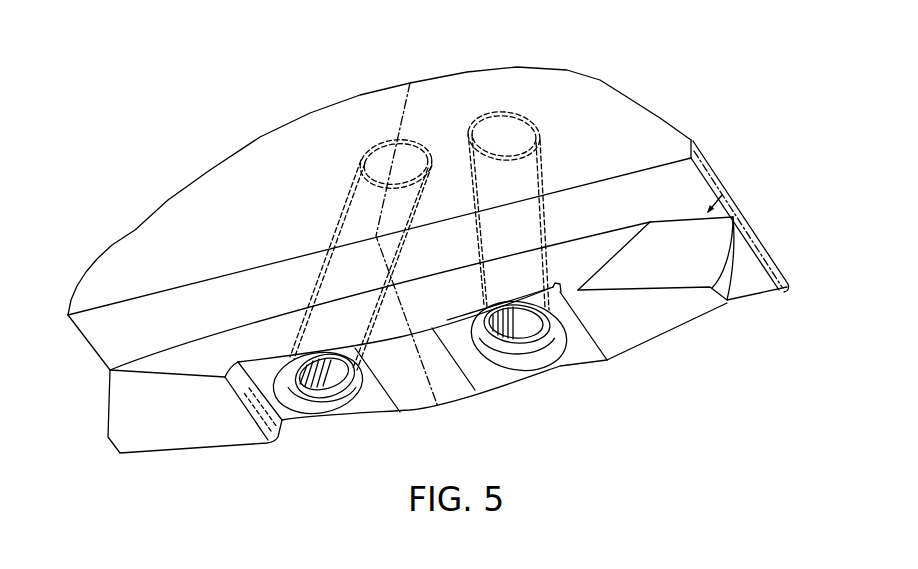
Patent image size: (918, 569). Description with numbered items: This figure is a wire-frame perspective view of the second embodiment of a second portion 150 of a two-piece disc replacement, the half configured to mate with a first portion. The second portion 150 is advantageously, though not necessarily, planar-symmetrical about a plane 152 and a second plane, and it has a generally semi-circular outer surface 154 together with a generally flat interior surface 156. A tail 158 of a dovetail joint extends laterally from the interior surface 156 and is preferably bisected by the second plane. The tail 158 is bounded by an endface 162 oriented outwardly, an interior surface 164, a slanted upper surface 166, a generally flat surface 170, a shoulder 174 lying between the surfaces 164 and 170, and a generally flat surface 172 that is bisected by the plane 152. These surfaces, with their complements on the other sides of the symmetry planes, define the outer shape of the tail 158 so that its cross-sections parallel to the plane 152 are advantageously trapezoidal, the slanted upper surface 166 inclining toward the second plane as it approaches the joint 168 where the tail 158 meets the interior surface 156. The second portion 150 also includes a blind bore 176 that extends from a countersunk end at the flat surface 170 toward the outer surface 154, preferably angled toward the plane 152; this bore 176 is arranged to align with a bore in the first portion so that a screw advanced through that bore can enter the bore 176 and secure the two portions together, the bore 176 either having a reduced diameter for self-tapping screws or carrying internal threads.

The second portion 150 is at (194, 76).
The plane 152 is at (392, 141).
The outer surface 154 is at (560, 72).
The interior surface 156 is at (693, 180).
The tail 158 is at (722, 195).
The endface 162 is at (730, 253).
The interior surface 164 is at (657, 327).
The slanted upper surface 166 is at (672, 280).
The joint 168 is at (672, 218).
The flat surface 170 is at (467, 352).
The flat surface 172 is at (444, 374).
The shoulder 174 is at (583, 333).
The blind bore 176 is at (493, 173).